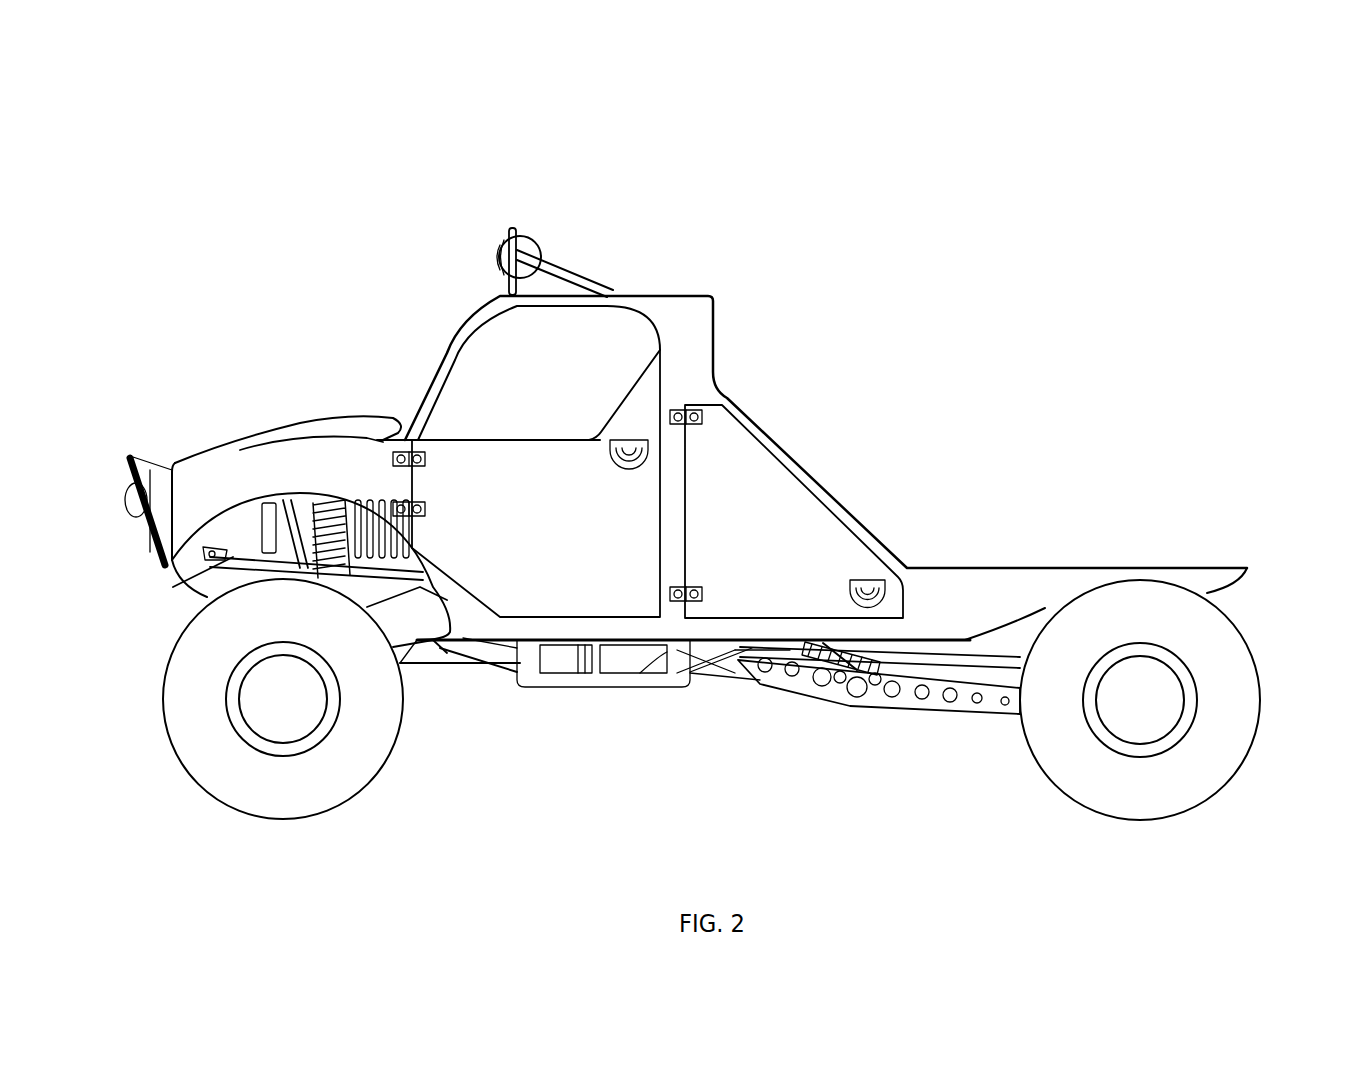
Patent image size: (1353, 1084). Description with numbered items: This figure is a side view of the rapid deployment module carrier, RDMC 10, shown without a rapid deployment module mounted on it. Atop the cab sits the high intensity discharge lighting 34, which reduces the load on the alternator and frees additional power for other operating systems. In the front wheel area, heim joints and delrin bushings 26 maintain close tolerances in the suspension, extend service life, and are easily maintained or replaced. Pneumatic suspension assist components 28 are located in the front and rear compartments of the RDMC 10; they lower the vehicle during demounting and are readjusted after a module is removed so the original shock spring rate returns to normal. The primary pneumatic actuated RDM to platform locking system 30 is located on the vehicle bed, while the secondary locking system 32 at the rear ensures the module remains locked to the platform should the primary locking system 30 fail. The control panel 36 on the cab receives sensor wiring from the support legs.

The RDMC 10 is at (963, 228).
The heim joints and delrin bushings 26 is at (210, 558).
The pneumatic suspension assist components 28 is at (300, 496).
The primary pneumatic actuated RDM to platform locking system 30 is at (1225, 568).
The secondary locking system 32 is at (997, 606).
The high intensity discharge lighting 34 is at (535, 238).
The control panel 36 is at (507, 477).